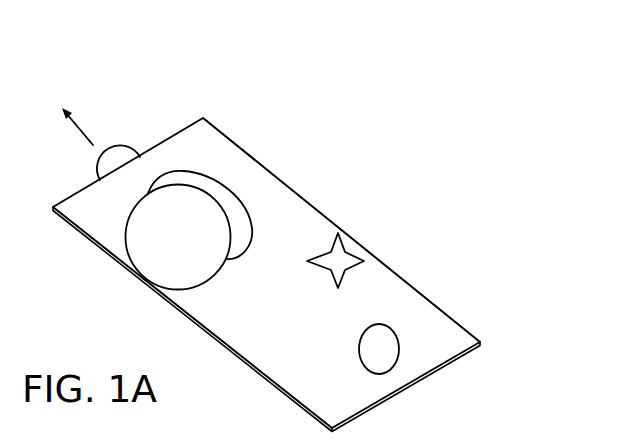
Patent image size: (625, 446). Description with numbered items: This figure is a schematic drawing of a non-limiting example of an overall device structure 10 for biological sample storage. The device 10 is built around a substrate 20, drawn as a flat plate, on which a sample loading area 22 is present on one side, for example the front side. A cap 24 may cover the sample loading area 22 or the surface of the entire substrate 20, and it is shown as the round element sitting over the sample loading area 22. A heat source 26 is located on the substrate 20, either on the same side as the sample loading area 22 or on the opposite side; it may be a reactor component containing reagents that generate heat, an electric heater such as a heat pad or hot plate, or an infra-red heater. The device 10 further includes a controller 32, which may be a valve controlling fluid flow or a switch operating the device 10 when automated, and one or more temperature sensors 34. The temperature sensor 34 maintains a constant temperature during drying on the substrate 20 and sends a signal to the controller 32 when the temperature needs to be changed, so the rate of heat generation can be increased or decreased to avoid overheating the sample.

The device 10 is at (472, 80).
The substrate 20 is at (222, 133).
The sample loading area 22 is at (240, 200).
The cap 24 is at (127, 240).
The heat source 26 is at (87, 133).
The controller 32 is at (397, 332).
The temperature sensor 34 is at (347, 233).